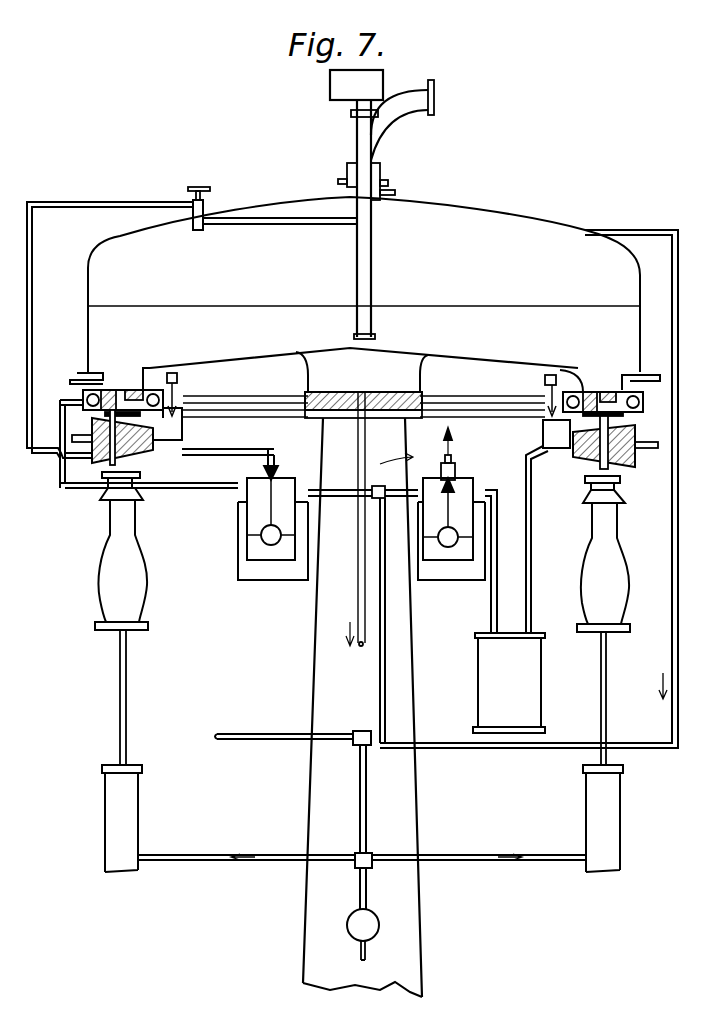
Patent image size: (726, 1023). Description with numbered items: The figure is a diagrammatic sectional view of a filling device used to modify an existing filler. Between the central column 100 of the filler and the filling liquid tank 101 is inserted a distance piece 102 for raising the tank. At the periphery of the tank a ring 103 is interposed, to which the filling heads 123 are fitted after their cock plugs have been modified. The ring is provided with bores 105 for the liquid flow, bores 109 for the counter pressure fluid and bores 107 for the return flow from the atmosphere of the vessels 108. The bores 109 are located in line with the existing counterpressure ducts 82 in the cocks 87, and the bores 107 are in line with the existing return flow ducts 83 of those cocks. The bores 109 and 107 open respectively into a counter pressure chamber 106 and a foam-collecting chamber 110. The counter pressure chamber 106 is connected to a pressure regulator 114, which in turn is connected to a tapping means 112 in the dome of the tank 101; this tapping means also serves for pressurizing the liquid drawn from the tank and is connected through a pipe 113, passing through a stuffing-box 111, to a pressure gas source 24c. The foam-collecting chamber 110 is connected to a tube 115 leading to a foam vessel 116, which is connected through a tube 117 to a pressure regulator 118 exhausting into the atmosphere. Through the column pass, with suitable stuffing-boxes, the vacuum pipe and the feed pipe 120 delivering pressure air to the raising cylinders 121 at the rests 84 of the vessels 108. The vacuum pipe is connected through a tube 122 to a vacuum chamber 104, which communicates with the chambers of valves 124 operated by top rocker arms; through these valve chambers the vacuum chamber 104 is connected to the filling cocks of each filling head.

The pressure gas source 24c is at (330, 92).
The stuffing-box 111 is at (378, 172).
The pipe 113 is at (283, 218).
The tapping means 112 is at (205, 187).
The filling liquid tank 101 is at (423, 212).
The tube 122 is at (238, 402).
The distance piece 102 is at (366, 390).
The central column 100 is at (327, 606).
The bores for the liquid flow 105 is at (123, 390).
The counter pressure chamber 106 is at (83, 394).
The foam-collecting chamber 110 is at (157, 392).
The counterpressure ducts 82 is at (108, 465).
The cocks 87 is at (152, 457).
The vacuum chamber 104 is at (183, 397).
The rests 84 is at (100, 623).
The raising cylinders 121 is at (135, 800).
The ring 103 is at (603, 393).
The valves 124 is at (524, 417).
The bores for the return flow 107 is at (569, 434).
The bores for the counter pressure fluid 109 is at (626, 470).
The filling heads 123 is at (596, 486).
The vessels 108 is at (622, 593).
The tube 115 is at (524, 483).
The return flow ducts 83 is at (531, 535).
The pressure regulator 114 is at (273, 529).
The pressure regulator 118 is at (451, 504).
The tube 117 is at (491, 607).
The foam vessel 116 is at (509, 683).
The feed pipe 120 is at (365, 823).